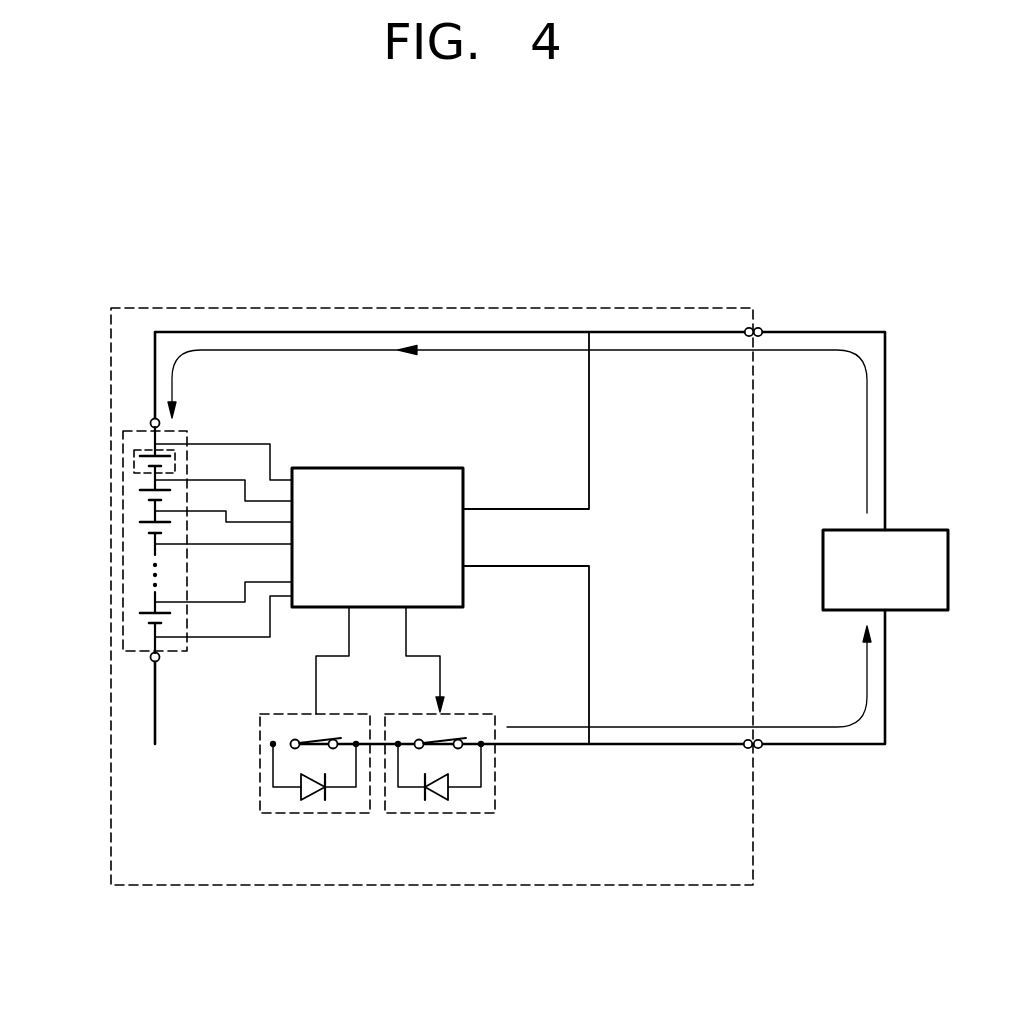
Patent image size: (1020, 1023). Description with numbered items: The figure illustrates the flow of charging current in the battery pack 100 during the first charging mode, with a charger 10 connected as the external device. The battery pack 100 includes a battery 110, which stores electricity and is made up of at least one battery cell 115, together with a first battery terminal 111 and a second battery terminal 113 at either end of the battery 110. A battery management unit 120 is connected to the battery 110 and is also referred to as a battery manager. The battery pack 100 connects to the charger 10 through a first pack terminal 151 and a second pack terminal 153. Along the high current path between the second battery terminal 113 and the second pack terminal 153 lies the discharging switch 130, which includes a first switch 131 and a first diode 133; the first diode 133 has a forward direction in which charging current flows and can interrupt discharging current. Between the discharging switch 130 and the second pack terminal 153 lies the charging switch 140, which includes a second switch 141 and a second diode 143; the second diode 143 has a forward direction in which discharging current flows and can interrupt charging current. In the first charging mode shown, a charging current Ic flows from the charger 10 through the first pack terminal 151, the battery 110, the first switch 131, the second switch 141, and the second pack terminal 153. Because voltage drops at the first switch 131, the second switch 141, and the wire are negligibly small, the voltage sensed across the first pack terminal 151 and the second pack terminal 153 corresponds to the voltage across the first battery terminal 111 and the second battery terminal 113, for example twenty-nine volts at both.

The battery pack 100 is at (661, 306).
The charger 10 is at (925, 528).
The battery 110 is at (118, 540).
The first battery terminal 111 is at (151, 421).
The second battery terminal 113 is at (151, 660).
The battery cell 115 is at (135, 462).
The battery management unit 120 is at (416, 467).
The discharging switch 130 is at (276, 766).
The first switch 131 is at (293, 740).
The first diode 133 is at (313, 801).
The charging switch 140 is at (485, 763).
The second switch 141 is at (459, 740).
The second diode 143 is at (435, 801).
The first pack terminal 151 is at (745, 337).
The second pack terminal 153 is at (745, 740).
The charging current Ic is at (236, 350).